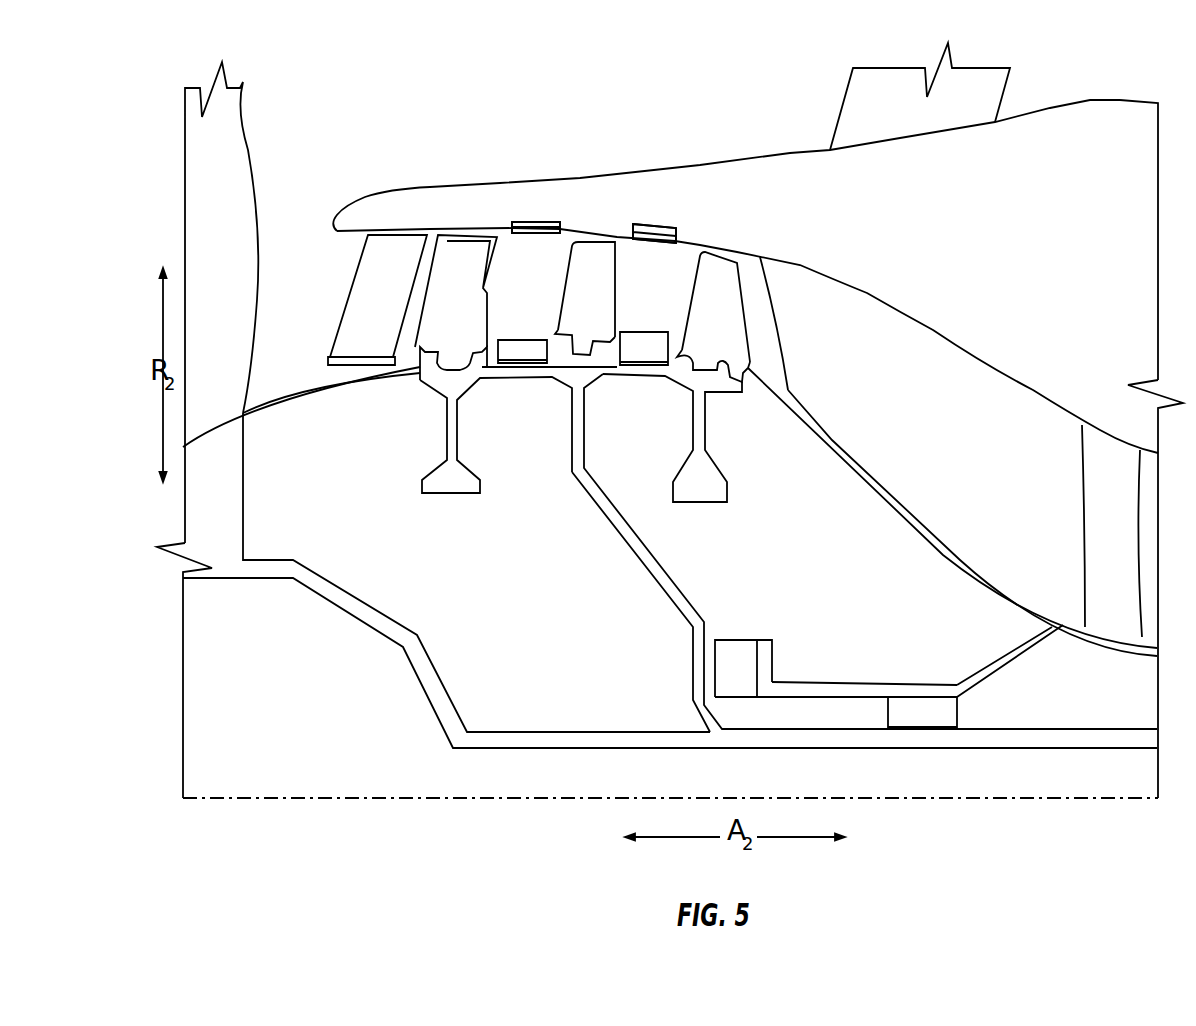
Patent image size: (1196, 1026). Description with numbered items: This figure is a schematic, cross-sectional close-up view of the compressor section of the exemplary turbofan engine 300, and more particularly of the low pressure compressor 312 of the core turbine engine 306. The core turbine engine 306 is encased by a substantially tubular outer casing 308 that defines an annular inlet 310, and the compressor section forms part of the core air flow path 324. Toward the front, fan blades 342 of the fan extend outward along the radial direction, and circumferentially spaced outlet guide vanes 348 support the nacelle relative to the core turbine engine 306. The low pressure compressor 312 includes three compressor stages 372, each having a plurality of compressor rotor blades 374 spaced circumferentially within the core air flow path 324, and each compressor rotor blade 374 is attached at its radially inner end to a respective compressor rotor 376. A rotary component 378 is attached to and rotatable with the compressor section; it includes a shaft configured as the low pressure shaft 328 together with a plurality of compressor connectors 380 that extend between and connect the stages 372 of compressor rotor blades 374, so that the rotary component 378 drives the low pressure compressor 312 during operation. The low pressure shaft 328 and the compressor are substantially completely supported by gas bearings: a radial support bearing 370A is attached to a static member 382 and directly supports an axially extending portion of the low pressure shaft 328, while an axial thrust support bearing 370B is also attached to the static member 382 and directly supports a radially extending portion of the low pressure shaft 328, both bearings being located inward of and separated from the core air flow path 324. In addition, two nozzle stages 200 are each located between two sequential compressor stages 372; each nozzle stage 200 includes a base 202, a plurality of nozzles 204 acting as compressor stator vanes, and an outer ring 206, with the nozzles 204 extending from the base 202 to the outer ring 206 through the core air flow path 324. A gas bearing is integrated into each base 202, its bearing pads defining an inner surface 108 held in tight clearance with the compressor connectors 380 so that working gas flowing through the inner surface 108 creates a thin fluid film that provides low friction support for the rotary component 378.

The inner surface 108 is at (541, 375).
The nozzle stage 200 is at (538, 200).
The base 202 is at (507, 350).
The nozzles 204 is at (530, 259).
The outer ring 206 is at (657, 224).
The turbofan engine 300 is at (455, 66).
The core turbine engine 306 is at (1082, 126).
The outer casing 308 is at (790, 153).
The annular inlet 310 is at (313, 250).
The low pressure compressor 312 is at (780, 218).
The core air flow path 324 is at (872, 290).
The low pressure shaft 328 is at (1070, 738).
The fan blades 342 is at (233, 123).
The outlet guide vanes 348 is at (993, 90).
The radial support bearing 370A is at (902, 710).
The axial thrust support bearing 370B is at (733, 658).
The compressor stage 372 is at (470, 210).
The compressor rotor blades 374 is at (588, 258).
The compressor rotor 376 is at (448, 433).
The rotary component 378 is at (585, 607).
The compressor connectors 380 is at (518, 370).
The static member 382 is at (982, 673).